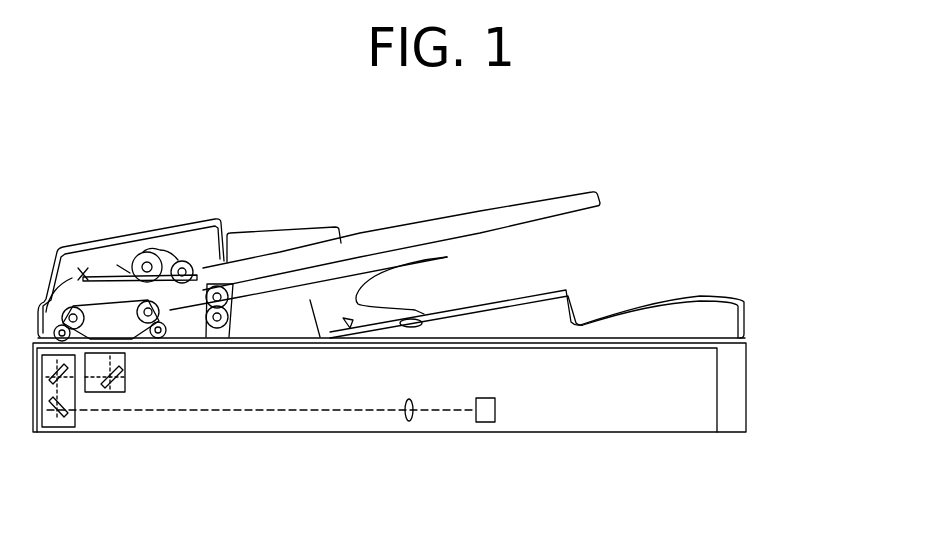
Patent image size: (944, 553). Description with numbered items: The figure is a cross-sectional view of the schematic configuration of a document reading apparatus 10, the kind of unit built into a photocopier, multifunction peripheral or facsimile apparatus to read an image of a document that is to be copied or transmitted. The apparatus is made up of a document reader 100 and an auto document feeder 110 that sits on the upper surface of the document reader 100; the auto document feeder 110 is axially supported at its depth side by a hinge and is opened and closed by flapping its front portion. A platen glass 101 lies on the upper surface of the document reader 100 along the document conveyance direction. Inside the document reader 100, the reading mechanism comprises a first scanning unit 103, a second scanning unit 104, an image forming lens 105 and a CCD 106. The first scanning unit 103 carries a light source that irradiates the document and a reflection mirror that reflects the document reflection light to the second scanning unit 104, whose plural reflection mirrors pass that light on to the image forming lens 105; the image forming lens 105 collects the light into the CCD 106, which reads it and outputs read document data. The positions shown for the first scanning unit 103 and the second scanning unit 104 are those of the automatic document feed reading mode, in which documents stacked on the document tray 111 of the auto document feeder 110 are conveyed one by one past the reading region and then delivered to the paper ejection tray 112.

The document reading apparatus 10 is at (148, 142).
The document reader 100 is at (748, 383).
The platen glass 101 is at (560, 350).
The first scanning unit 103 is at (115, 393).
The second scanning unit 104 is at (55, 428).
The image forming lens 105 is at (409, 421).
The CCD 106 is at (486, 422).
The auto document feeder 110 is at (637, 264).
The document tray 111 is at (465, 212).
The paper ejection tray 112 is at (493, 281).